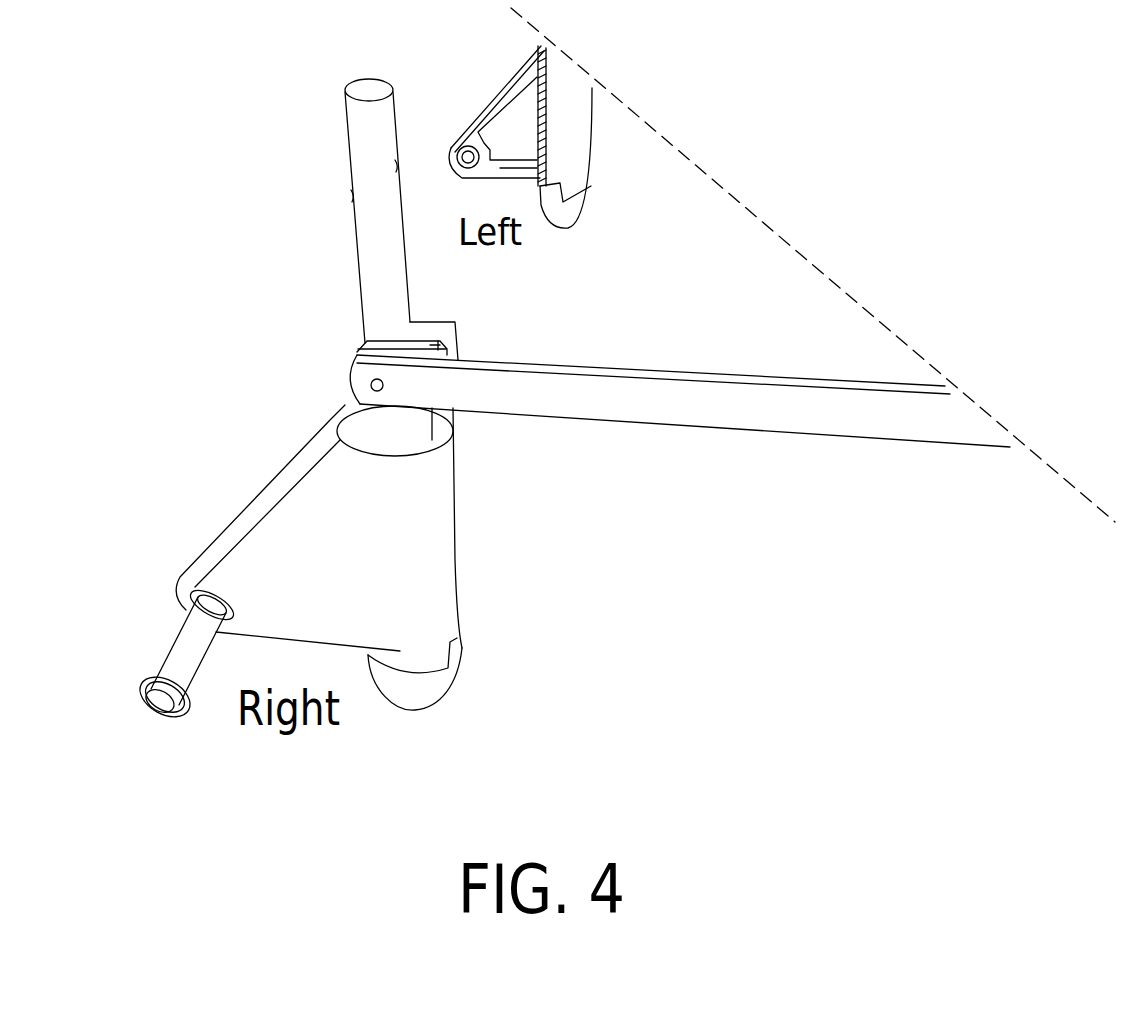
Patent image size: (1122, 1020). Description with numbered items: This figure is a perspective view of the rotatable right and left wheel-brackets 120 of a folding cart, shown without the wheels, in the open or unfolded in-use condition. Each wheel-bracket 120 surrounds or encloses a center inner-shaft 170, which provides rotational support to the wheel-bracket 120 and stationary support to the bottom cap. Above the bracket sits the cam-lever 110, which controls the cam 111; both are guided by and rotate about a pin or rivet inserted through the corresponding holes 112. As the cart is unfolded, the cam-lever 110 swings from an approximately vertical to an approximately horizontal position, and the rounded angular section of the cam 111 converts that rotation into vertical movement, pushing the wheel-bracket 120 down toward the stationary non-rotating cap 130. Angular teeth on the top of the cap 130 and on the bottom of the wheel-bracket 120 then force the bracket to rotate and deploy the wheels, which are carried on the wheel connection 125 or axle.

The cam-lever 110 is at (416, 386).
The cam 111 is at (412, 421).
The holes 112 is at (360, 372).
The wheel-bracket 120 is at (423, 551).
The wheel connection 125 is at (185, 645).
The non-rotating cap 130 is at (417, 692).
The inner-shaft 170 is at (375, 270).